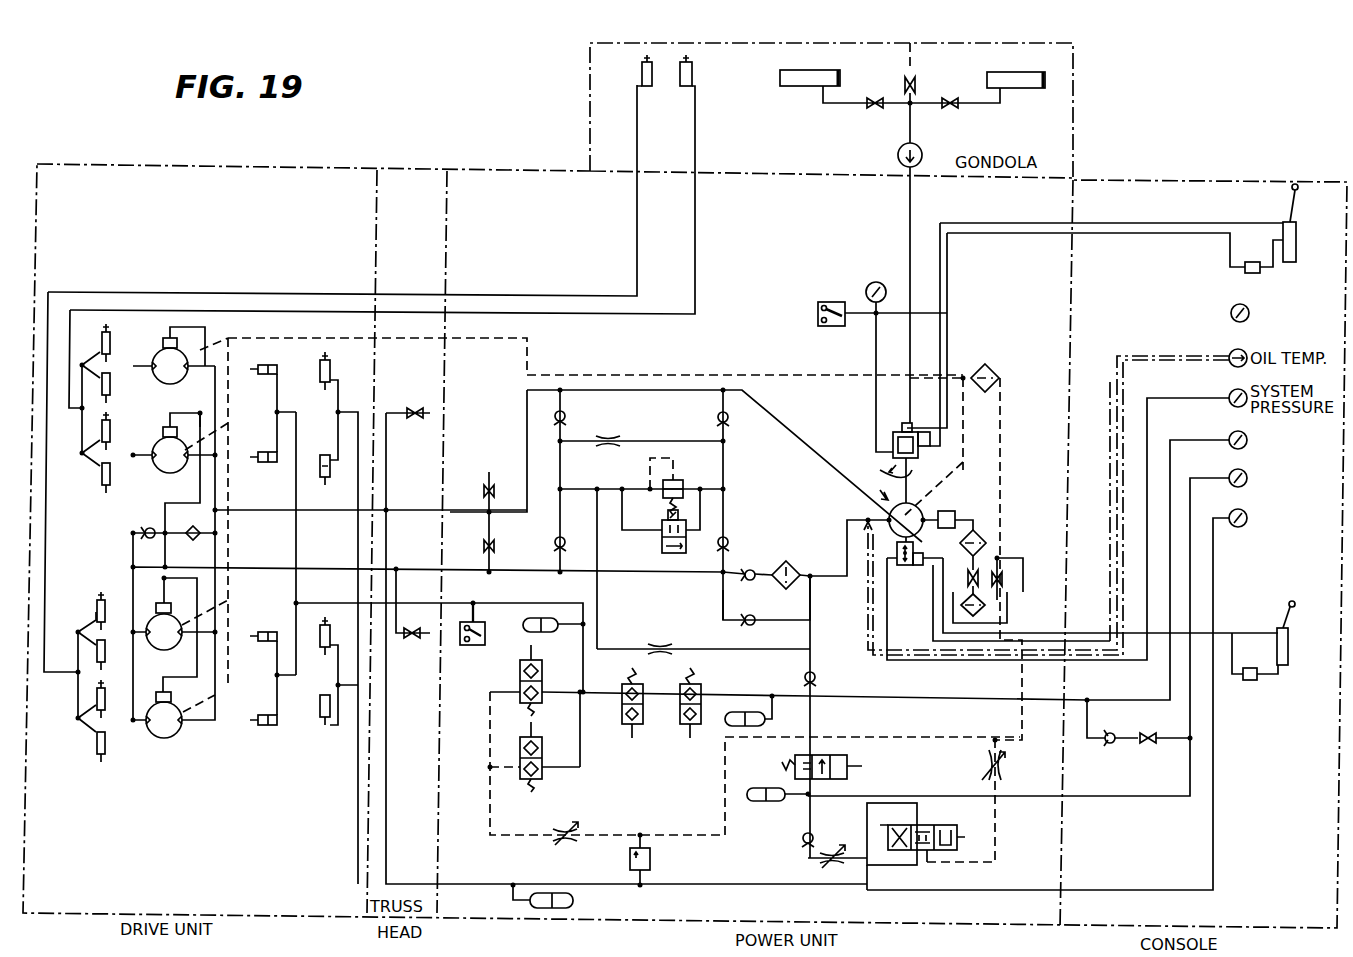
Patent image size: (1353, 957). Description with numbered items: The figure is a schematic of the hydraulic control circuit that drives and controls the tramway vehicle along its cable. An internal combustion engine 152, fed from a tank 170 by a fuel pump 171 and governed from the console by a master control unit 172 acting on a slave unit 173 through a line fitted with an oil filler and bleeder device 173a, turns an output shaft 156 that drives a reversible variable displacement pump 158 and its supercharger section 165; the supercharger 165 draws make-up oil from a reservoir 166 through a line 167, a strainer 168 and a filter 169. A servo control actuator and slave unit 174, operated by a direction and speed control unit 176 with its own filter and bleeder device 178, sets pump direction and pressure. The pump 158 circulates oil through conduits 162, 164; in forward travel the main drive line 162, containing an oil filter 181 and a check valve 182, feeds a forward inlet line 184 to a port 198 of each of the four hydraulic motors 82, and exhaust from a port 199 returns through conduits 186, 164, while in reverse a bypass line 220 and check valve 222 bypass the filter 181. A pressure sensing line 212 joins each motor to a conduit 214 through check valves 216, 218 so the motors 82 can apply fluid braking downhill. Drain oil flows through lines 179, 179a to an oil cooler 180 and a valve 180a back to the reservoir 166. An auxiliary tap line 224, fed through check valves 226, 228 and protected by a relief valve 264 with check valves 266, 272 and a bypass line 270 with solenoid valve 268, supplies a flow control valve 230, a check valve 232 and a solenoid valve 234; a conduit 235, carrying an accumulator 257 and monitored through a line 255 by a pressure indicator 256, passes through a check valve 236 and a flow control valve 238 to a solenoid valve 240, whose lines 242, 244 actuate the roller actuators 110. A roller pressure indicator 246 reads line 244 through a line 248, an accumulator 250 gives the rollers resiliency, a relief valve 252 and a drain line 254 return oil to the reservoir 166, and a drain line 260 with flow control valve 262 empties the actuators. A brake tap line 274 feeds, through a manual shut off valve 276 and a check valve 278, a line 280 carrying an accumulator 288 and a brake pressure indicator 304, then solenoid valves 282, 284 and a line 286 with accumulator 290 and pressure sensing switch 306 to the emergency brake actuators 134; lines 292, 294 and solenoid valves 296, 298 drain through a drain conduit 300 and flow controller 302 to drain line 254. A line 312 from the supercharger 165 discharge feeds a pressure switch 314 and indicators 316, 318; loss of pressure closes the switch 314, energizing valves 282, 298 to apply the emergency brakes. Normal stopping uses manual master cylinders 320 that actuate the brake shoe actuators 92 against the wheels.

The hydraulic motor 82 is at (164, 378).
The fluid brake shoe actuator 92 is at (110, 356).
The hydraulic actuator 110 is at (320, 455).
The hydraulic actuator 134 is at (260, 452).
The internal combustion engine 152 is at (895, 432).
The output shaft 156 is at (916, 470).
The hydraulic pump 158 is at (892, 496).
The main drive line 162 is at (847, 528).
The main return conduit 164 is at (845, 478).
The supercharger pump section 165 is at (945, 511).
The reservoir 166 is at (1007, 606).
The line 167 is at (980, 530).
The strainer 168 is at (961, 606).
The filter 169 is at (982, 538).
The fuel tank 170 is at (790, 86).
The fuel pump 171 is at (898, 150).
The remote hydraulic master control unit 172 is at (1300, 232).
The slave unit 173 is at (924, 432).
The oil filler and bleeder device 173a is at (1245, 269).
The servo control actuator and slave unit 174 is at (916, 565).
The vehicle direction and speed control unit 176 is at (1289, 640).
The oil filter and bleeder device 178 is at (1248, 680).
The drain line 179 is at (958, 445).
The drain line 179a is at (527, 350).
The oil cooler 180 is at (993, 370).
The valve 180a is at (1004, 568).
The oil filter 181 is at (796, 565).
The check valve 182 is at (750, 569).
The forward inlet line 184 is at (133, 516).
The conduit 186 is at (220, 478).
The motor port 198 is at (160, 362).
The motor port 199 is at (183, 724).
The pressure sensing line 212 is at (205, 398).
The conduit 214 is at (178, 532).
The check valve 216 is at (150, 527).
The check valve 218 is at (200, 536).
The bypass line 220 is at (715, 605).
The check valve 222 is at (756, 618).
The auxiliary tap line 224 is at (600, 535).
The check valve 226 is at (554, 538).
The check valve 228 is at (583, 414).
The flow control valve 230 is at (660, 644).
The check valve 232 is at (816, 677).
The solenoid operated valve 234 is at (848, 760).
The conduit 235 is at (805, 812).
The check valve 236 is at (814, 834).
The flow control valve 238 is at (835, 866).
The solenoid operated valve 240 is at (942, 825).
The line 242 is at (868, 876).
The line 244 is at (386, 826).
The roller pressure indicator 246 is at (1232, 512).
The line 248 is at (1158, 888).
The accumulator 250 is at (573, 900).
The pressure relief valve 252 is at (650, 862).
The drain line 254 is at (712, 825).
The line 255 is at (943, 796).
The pressure indicator 256 is at (1229, 474).
The accumulator 257 is at (770, 802).
The drain line 260 is at (995, 862).
The flow control valve 262 is at (1002, 768).
The pressure relief valve 264 is at (695, 470).
The check valve 266 is at (718, 413).
The solenoid operated valve 268 is at (680, 553).
The bypass line 270 is at (662, 522).
The check valve 272 is at (745, 532).
The brake tap line 274 is at (1178, 742).
The manual shut off valve 276 is at (1148, 733).
The check valve 278 is at (1110, 744).
The line 280 is at (965, 698).
The solenoid actuated valve 282 is at (680, 722).
The solenoid actuated valve 284 is at (622, 720).
The line 286 is at (545, 600).
The accumulator 288 is at (768, 719).
The accumulator 290 is at (538, 632).
The drain line 292 is at (576, 694).
The drain line 294 is at (560, 767).
The solenoid valve 296 is at (520, 676).
The solenoid valve 298 is at (542, 752).
The drain conduit 300 is at (490, 812).
The flow controller 302 is at (568, 845).
The brake pressure indicator 304 is at (1229, 436).
The pressure sensing switch 306 is at (482, 645).
The line 312 is at (876, 436).
The pressure switch 314 is at (820, 302).
The pressure indicator 316 is at (872, 283).
The pressure indicator 318 is at (1236, 306).
The hydraulic master cylinder 320 is at (685, 88).